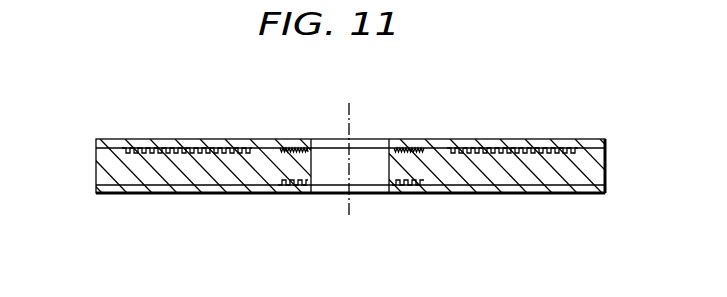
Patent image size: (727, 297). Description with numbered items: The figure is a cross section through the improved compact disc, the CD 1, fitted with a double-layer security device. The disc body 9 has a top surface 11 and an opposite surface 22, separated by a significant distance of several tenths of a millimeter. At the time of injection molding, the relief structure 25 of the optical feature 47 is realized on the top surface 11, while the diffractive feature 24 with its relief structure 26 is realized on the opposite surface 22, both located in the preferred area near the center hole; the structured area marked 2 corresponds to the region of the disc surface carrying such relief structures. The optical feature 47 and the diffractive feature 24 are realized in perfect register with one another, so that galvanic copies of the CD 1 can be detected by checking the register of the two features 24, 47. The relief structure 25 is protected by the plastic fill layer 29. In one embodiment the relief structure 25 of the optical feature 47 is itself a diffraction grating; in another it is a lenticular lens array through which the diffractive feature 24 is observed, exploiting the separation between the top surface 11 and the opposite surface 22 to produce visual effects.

The compact disc 1 is at (97, 166).
The structured surface region 2 is at (252, 135).
The disc body 9 is at (174, 167).
The top surface 11 is at (582, 147).
The opposite surface 22 is at (560, 188).
The diffractive feature 24 is at (313, 202).
The relief structure 25 is at (287, 150).
The relief structure 26 is at (421, 178).
The plastic fill layer 29 is at (110, 190).
The optical feature 47 is at (313, 132).